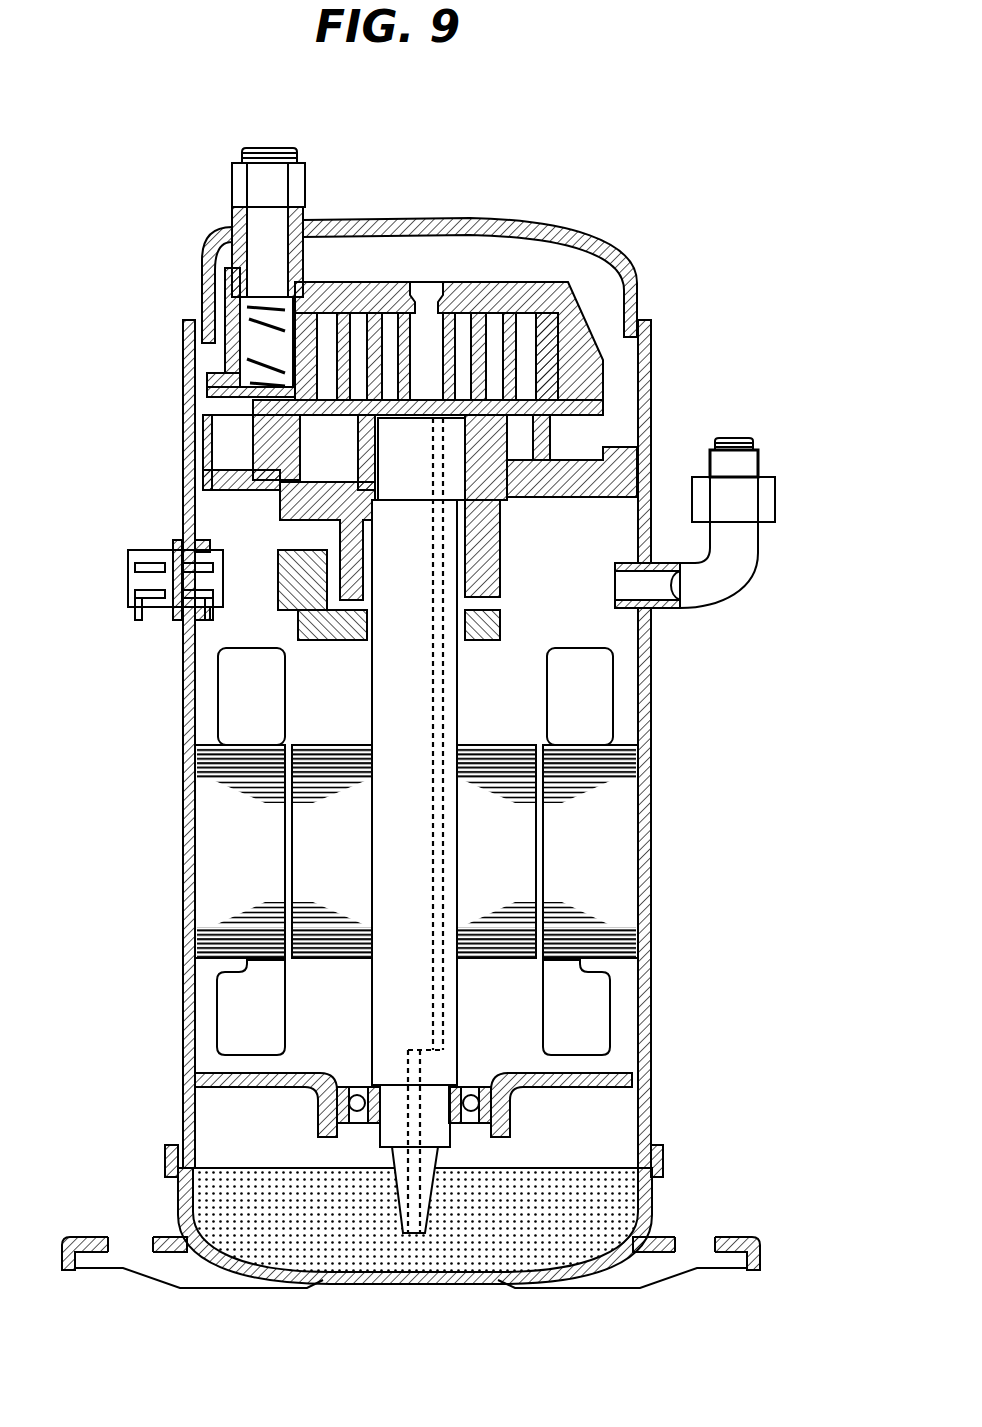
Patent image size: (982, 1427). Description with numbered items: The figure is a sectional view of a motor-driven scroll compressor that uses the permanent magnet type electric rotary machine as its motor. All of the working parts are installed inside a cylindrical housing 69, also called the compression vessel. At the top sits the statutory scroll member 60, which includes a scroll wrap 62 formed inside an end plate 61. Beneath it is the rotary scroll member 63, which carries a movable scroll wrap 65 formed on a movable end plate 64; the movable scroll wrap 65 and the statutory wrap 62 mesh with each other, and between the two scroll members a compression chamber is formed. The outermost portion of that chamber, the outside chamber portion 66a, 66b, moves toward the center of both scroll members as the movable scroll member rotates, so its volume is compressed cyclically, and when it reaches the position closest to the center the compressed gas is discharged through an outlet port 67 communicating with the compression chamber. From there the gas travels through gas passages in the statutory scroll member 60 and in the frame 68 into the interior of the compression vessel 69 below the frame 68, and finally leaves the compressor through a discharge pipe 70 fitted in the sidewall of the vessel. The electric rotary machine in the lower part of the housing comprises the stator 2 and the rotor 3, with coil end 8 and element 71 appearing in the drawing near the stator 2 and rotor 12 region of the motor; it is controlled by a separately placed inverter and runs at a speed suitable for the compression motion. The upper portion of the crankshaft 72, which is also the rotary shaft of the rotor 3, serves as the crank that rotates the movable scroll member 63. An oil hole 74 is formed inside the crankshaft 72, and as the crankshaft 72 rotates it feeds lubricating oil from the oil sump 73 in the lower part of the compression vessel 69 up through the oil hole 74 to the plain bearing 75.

The stator 2 is at (210, 820).
The rotor 3 is at (323, 743).
The coil end 8 is at (236, 686).
The rotor 12 is at (317, 857).
The statutory scroll member 60 is at (580, 240).
The end plate 61 is at (493, 287).
The scroll wrap 62 is at (373, 352).
The rotary scroll member 63 is at (247, 440).
The movable end plate 64 is at (237, 418).
The movable scroll wrap 65 is at (542, 357).
The outside chamber portion 66a is at (524, 330).
The outside chamber portion 66b is at (323, 360).
The outlet port 67 is at (428, 290).
The frame 68 is at (282, 502).
The cylindrical housing 69 is at (645, 683).
The discharge pipe 70 is at (745, 548).
The stator coil 71 is at (613, 745).
The crankshaft 72 is at (393, 618).
The oil sump 73 is at (535, 1175).
The oil hole 74 is at (440, 1023).
The plain bearing 75 is at (632, 478).